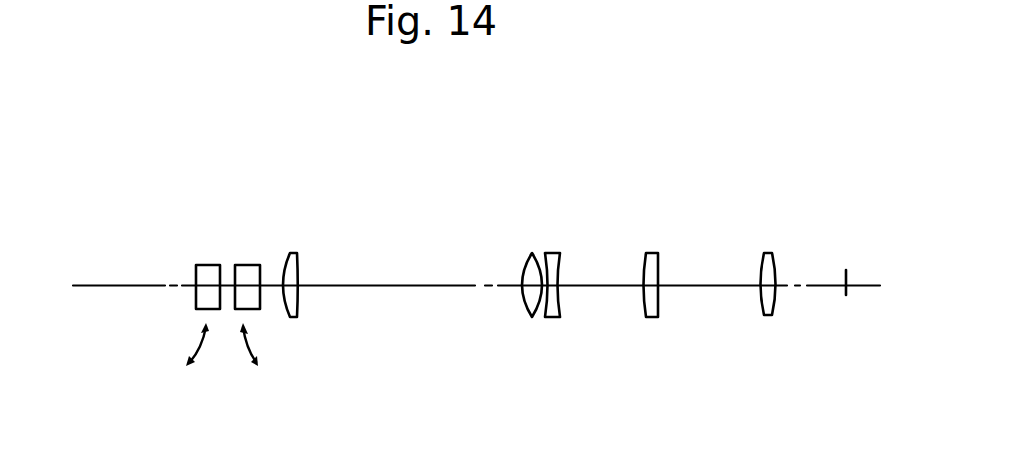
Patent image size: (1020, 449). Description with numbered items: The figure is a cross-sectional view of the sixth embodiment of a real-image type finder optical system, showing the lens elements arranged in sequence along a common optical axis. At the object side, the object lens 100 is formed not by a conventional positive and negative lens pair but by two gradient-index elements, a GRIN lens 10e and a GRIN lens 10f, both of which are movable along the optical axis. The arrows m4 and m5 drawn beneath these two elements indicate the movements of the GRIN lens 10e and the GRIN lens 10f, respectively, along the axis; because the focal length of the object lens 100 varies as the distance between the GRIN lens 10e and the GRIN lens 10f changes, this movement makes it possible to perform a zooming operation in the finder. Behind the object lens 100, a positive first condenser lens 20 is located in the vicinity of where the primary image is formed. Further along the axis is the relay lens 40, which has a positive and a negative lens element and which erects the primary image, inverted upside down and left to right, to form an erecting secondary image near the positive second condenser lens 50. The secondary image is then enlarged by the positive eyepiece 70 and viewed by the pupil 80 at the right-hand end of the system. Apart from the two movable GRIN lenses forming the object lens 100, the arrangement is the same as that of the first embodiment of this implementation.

The GRIN lens 10e is at (207, 265).
The GRIN lens 10f is at (248, 265).
The first condenser lens 20 is at (298, 262).
The relay lens 40 is at (570, 226).
The second condenser lens 50 is at (648, 257).
The eyepiece 70 is at (763, 258).
The pupil 80 is at (846, 269).
The object lens 100 is at (262, 392).
The arrow m4 is at (198, 342).
The arrow m5 is at (247, 344).